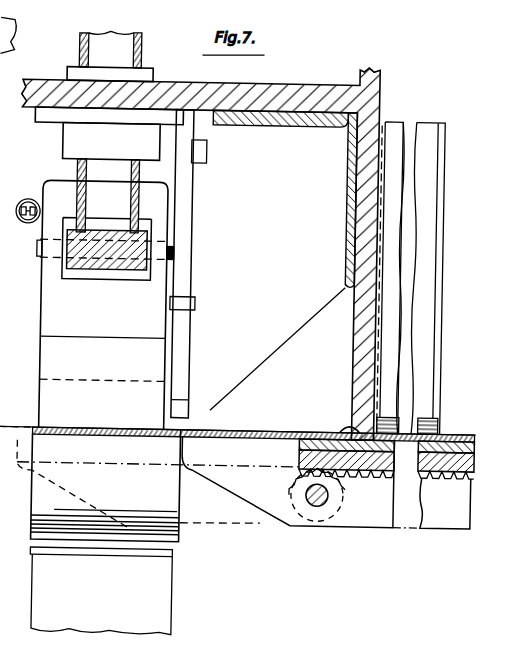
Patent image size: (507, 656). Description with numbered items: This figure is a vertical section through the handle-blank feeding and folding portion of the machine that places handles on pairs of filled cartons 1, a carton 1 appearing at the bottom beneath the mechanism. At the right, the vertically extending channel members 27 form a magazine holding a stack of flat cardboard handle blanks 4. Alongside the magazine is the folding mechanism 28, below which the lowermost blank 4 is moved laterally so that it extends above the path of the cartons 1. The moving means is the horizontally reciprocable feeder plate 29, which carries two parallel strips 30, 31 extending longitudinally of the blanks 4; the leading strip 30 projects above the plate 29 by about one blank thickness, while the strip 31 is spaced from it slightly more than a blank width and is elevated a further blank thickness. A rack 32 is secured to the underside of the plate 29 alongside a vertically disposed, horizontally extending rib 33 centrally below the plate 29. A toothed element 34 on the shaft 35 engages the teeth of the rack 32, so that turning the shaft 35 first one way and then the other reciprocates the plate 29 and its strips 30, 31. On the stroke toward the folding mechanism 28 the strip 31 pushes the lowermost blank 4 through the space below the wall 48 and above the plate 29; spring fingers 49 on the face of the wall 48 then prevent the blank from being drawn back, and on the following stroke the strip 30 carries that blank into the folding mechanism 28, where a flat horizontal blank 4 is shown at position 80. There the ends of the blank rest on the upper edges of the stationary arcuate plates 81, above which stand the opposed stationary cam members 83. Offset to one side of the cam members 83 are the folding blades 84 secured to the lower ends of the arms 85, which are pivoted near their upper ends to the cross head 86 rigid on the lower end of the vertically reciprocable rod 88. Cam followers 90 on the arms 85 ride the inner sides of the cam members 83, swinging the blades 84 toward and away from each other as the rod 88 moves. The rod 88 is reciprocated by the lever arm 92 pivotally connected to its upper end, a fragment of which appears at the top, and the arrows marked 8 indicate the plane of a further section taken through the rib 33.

The filled cartons 1 is at (175, 613).
The handle blank 4 is at (138, 432).
The reference direction 8 is at (10, 428).
The channel members 27 is at (442, 123).
The folding mechanism 28 is at (231, 249).
The feeder plate 29 is at (308, 431).
The strip 30 is at (350, 431).
The strip 31 is at (446, 485).
The rack 32 is at (302, 457).
The rib 33 is at (282, 518).
The gear 34 is at (337, 496).
The shaft 35 is at (321, 506).
The wall 48 is at (346, 284).
The spring fingers 49 is at (360, 430).
The position 80 is at (62, 434).
The stationary plates 81 is at (183, 535).
The cam members 83 is at (190, 333).
The folding blades 84 is at (162, 394).
The arms 85 is at (44, 298).
The cross head 86 is at (168, 247).
The rod 88 is at (139, 42).
The cam followers 90 is at (195, 300).
The lever arm 92 is at (12, 30).